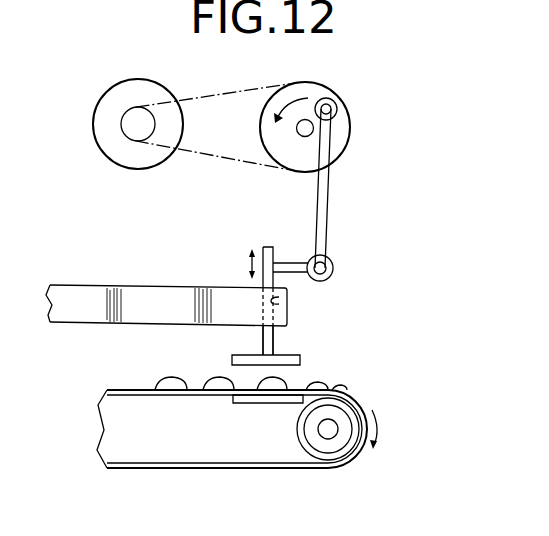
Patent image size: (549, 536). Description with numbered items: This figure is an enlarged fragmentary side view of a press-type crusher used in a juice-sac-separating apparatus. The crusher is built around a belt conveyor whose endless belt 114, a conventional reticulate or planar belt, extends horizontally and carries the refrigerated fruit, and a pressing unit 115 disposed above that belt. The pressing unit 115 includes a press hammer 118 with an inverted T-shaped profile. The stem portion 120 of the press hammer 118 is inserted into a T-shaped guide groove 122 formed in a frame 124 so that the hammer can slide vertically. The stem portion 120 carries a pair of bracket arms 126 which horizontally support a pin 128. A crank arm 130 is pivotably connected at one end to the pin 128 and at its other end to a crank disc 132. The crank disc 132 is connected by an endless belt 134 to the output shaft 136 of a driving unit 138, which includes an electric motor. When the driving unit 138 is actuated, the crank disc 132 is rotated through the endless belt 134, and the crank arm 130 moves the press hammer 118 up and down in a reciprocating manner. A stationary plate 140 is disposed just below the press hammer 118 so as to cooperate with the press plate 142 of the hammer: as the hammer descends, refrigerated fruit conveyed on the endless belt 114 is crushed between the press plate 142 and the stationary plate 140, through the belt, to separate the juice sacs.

The endless belt 114 is at (284, 468).
The pressing unit 115 is at (362, 108).
The press hammer 118 is at (289, 344).
The stem portion 120 is at (266, 247).
The T-shaped guide groove 122 is at (281, 301).
The frame 124 is at (163, 285).
The bracket arms 126 is at (292, 263).
The pin 128 is at (333, 267).
The crank arm 130 is at (323, 217).
The crank disc 132 is at (350, 135).
The endless belt 134 is at (220, 93).
The output shaft 136 is at (133, 122).
The driving unit 138 is at (112, 97).
The stationary plate 140 is at (243, 404).
The press plate 142 is at (300, 360).